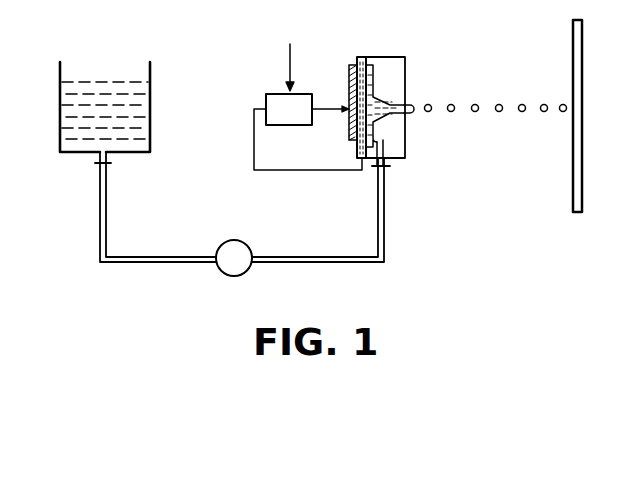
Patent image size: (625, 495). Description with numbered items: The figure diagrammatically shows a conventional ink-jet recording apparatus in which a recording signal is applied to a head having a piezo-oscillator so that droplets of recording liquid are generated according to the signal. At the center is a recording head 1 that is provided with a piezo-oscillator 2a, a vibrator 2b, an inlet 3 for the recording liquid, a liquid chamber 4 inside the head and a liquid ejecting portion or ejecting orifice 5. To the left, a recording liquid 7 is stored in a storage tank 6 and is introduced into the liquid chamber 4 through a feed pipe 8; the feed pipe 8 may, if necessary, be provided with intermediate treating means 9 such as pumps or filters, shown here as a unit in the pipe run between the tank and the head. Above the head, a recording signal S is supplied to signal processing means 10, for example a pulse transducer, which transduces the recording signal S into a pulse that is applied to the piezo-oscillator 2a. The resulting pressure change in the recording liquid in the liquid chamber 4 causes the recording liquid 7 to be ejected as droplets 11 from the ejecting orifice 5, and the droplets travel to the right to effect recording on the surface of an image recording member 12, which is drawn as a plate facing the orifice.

The recording head 1 is at (394, 55).
The piezo-oscillator 2a is at (349, 70).
The vibrator 2b is at (362, 57).
The inlet 3 is at (383, 143).
The liquid chamber 4 is at (375, 78).
The ejecting orifice 5 is at (411, 112).
The storage tank 6 is at (60, 92).
The recording liquid 7 is at (70, 136).
The feed pipe 8 is at (122, 263).
The intermediate treating means 9 is at (226, 275).
The signal processing means 10 is at (274, 94).
The droplets 11 is at (499, 104).
The image recording member 12 is at (573, 191).
The recording signal S is at (289, 57).